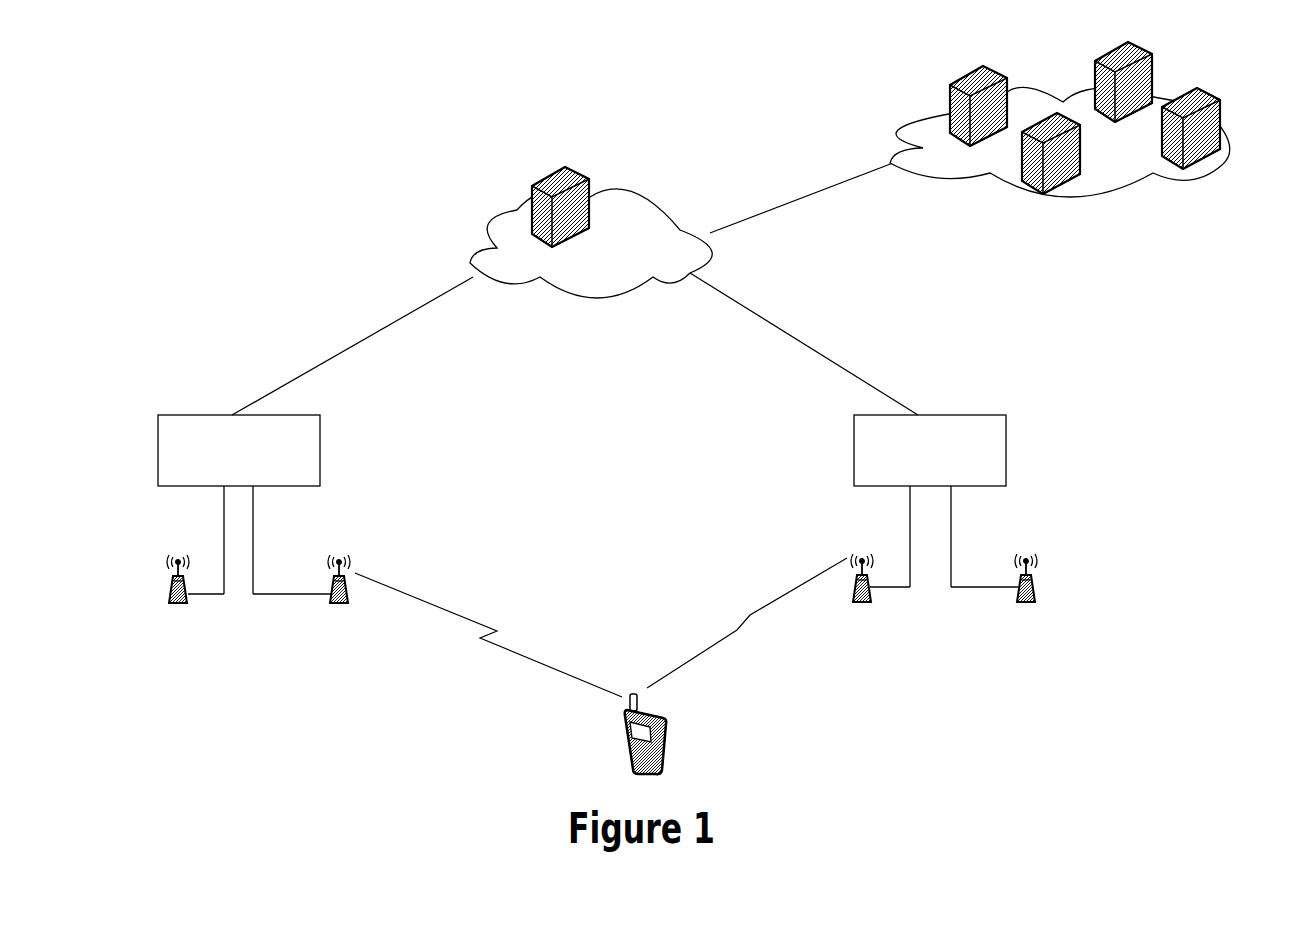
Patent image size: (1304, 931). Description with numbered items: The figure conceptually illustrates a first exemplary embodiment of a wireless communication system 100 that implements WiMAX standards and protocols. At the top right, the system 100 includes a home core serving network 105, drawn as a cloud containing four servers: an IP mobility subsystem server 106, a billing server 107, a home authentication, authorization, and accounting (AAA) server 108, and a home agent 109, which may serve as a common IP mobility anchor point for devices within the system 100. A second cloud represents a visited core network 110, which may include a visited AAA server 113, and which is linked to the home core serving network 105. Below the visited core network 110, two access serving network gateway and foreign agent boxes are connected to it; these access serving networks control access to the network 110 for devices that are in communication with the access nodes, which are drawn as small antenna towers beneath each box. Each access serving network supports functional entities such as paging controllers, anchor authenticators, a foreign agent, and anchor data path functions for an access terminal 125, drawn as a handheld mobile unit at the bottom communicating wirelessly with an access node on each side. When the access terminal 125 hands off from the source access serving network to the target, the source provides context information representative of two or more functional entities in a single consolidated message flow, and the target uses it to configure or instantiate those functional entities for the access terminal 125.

The wireless communication system 100 is at (158, 90).
The home core serving network 105 is at (1098, 198).
The IP mobility subsystem server 106 is at (950, 92).
The billing server 107 is at (1095, 72).
The home authentication, authorization, and accounting (AAA) server 108 is at (1222, 127).
The home agent 109 is at (1080, 168).
The visited core network 110 is at (613, 298).
The visited AAA server 113 is at (590, 192).
The access terminal 125 is at (668, 762).